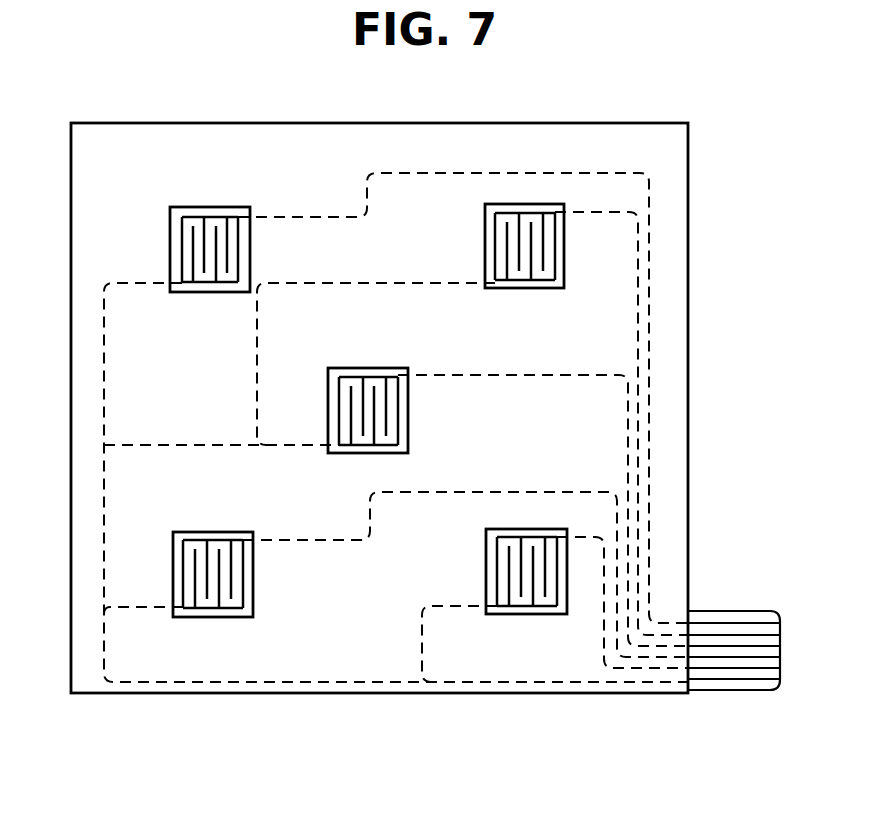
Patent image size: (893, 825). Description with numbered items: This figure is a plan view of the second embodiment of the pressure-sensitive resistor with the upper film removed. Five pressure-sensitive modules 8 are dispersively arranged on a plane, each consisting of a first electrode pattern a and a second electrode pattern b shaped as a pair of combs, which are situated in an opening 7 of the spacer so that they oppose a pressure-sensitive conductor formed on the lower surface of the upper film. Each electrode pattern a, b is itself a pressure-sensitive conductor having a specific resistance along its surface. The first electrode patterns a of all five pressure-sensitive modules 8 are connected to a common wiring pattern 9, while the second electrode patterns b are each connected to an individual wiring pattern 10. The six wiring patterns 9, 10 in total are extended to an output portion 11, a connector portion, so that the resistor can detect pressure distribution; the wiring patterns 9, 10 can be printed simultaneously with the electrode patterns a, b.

The opening 7 is at (170, 258).
The pressure-sensitive module 8 is at (342, 403).
The first electrode pattern a is at (238, 268).
The second electrode pattern b is at (232, 235).
The common wiring pattern 9 is at (527, 683).
The individual wiring pattern 10 is at (649, 201).
The output portion 11 is at (735, 611).